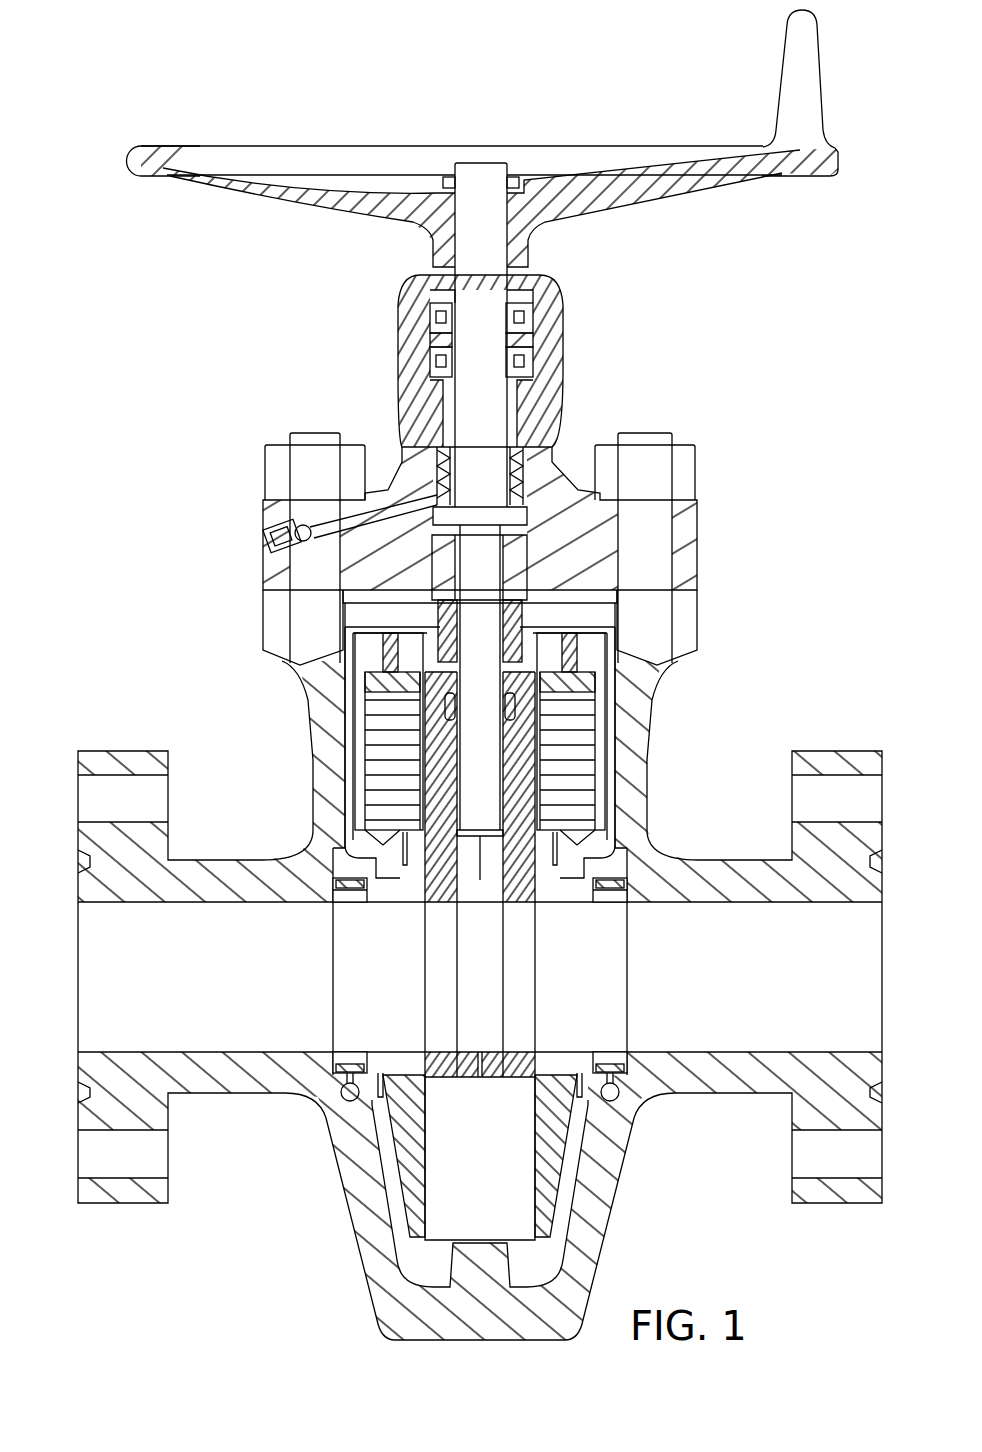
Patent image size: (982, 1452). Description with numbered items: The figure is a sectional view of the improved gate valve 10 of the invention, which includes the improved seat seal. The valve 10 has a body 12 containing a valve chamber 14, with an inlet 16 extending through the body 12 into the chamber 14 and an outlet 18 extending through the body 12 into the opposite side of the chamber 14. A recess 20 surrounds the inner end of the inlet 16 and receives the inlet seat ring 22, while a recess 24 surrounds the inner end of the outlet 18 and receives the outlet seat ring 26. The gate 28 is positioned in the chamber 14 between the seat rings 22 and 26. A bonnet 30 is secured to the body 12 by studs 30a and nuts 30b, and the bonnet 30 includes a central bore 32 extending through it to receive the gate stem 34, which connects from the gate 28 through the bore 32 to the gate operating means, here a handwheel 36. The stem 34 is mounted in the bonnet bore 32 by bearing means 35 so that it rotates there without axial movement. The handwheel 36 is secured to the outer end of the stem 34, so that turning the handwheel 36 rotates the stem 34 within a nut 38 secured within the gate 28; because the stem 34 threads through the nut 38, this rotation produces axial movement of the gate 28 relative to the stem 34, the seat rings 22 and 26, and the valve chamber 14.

The valve 10 is at (480, 675).
The body 12 is at (330, 1173).
The valve chamber 14 is at (590, 1155).
The inlet 16 is at (152, 1000).
The outlet 18 is at (628, 1062).
The recess 20 is at (363, 905).
The inlet seat ring 22 is at (387, 1053).
The recess 24 is at (612, 1060).
The outlet seat ring 26 is at (612, 903).
The gate 28 is at (556, 956).
The bonnet 30 is at (532, 542).
The studs 30a is at (637, 436).
The nuts 30b is at (692, 483).
The central bore 32 is at (524, 562).
The gate stem 34 is at (503, 400).
The bearing means 35 is at (552, 317).
The handwheel 36 is at (658, 197).
The nut 38 is at (515, 707).